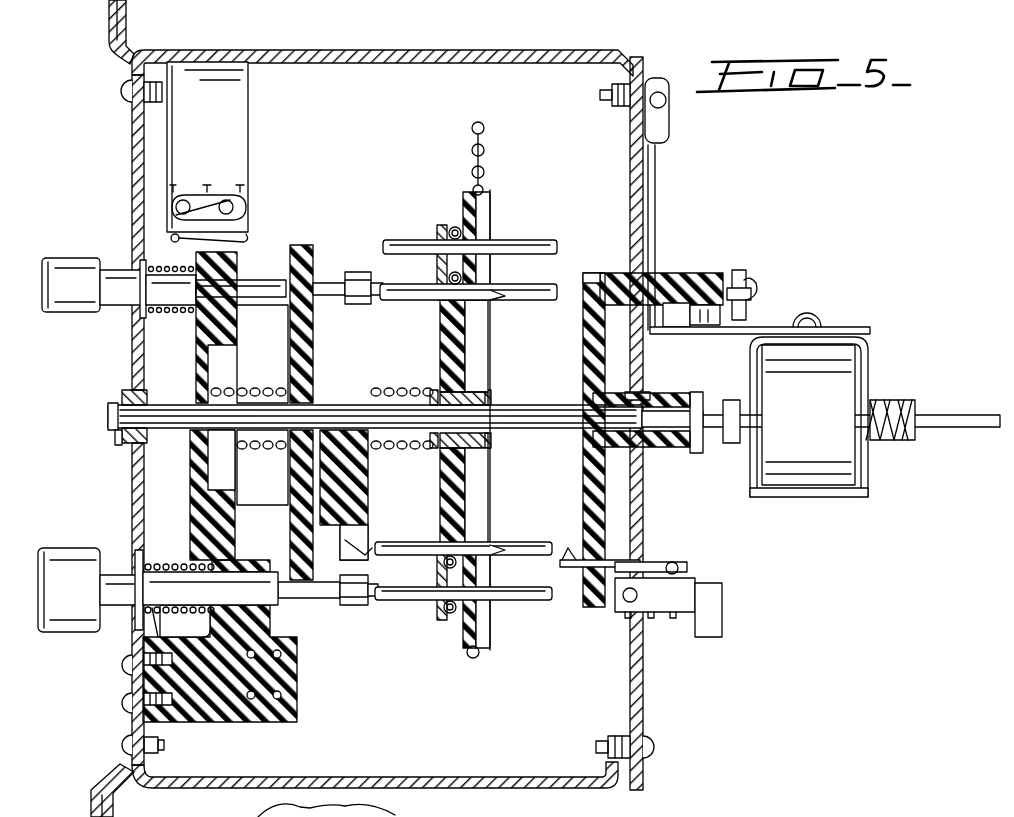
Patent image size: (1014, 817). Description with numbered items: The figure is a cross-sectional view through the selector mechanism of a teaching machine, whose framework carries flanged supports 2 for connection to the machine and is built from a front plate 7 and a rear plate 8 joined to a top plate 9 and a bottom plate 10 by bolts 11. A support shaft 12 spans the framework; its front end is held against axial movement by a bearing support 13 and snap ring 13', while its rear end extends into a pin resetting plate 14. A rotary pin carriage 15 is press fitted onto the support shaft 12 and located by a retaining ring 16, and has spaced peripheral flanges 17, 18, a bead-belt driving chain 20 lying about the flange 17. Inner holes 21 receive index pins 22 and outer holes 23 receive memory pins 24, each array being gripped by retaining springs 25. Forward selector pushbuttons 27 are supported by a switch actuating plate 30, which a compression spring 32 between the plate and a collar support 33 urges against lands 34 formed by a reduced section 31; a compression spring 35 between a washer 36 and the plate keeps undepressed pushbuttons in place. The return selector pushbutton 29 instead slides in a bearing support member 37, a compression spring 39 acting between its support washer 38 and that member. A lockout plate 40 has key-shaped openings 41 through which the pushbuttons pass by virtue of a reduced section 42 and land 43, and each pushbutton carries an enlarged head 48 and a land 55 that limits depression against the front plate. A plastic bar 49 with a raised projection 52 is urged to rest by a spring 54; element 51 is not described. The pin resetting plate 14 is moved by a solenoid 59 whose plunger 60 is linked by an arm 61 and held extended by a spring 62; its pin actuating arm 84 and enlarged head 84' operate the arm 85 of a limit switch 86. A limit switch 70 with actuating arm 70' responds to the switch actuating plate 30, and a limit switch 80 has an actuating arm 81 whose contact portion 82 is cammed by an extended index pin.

The flanged supports 2 is at (108, 62).
The front plate 7 is at (132, 168).
The rear plate 8 is at (643, 180).
The top plate 9 is at (378, 58).
The bottom plate 10 is at (452, 775).
The bolts 11 is at (124, 92).
The support shaft 12 is at (114, 133).
The bearing support 13 is at (108, 451).
The snap ring 13' is at (106, 382).
The pin resetting plate 14 is at (580, 344).
The rotary pin carriage 15 is at (508, 222).
The retaining ring 16 is at (430, 392).
The peripheral flange 17 is at (488, 192).
The peripheral flange 18 is at (436, 235).
The bead-belt driving chain 20 is at (485, 128).
The holes 21 is at (492, 296).
The index pins 22 is at (512, 286).
The holes 23 is at (495, 245).
The memory pins 24 is at (542, 240).
The retaining springs 25 is at (450, 228).
The forward selector pushbuttons 27 is at (70, 298).
The return selector pushbutton 29 is at (82, 590).
The switch actuating plate 30 is at (190, 515).
The reduced diameter section 31 is at (240, 297).
The compression spring 32 is at (246, 395).
The collar support 33 is at (285, 455).
The lands 34 is at (188, 312).
The compression spring 35 is at (160, 320).
The washer 36 is at (134, 268).
The bearing support member 37 is at (290, 682).
The support washer 38 is at (140, 552).
The compression spring 39 is at (178, 556).
The lockout plate 40 is at (316, 234).
The key-shaped openings 41 is at (330, 282).
The reduced diameter section 42 is at (345, 300).
The land 43 is at (280, 280).
The enlarged heads 48 is at (364, 270).
The plastic bar 49 is at (360, 478).
The arm 51 is at (366, 556).
The raised projection 52 is at (370, 530).
The spring 54 is at (394, 385).
The land 55 is at (106, 268).
The solenoid 59 is at (823, 393).
The plunger 60 is at (779, 405).
The arm 61 is at (820, 428).
The spring 62 is at (896, 398).
The limit switch 70 is at (207, 147).
The actuating arm 70' is at (230, 226).
The limit switch 80 is at (672, 608).
The actuating arm 81 is at (660, 562).
The contact portion 82 is at (562, 548).
The pin actuating arm 84 is at (730, 274).
The enlarged head 84' is at (769, 264).
The arm 85 is at (715, 326).
The limit switch 86 is at (678, 328).